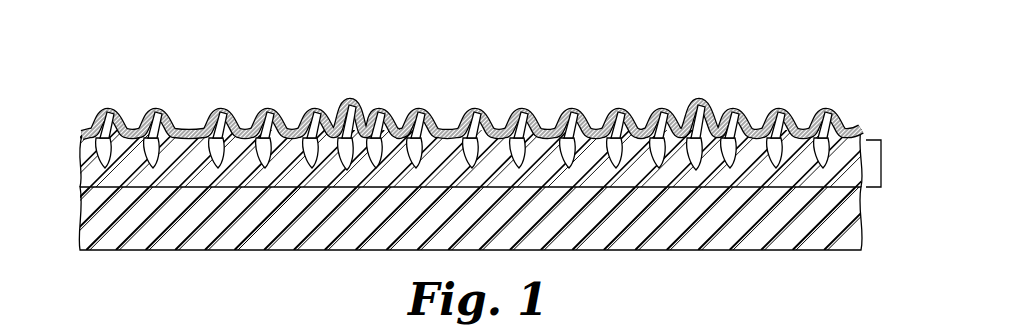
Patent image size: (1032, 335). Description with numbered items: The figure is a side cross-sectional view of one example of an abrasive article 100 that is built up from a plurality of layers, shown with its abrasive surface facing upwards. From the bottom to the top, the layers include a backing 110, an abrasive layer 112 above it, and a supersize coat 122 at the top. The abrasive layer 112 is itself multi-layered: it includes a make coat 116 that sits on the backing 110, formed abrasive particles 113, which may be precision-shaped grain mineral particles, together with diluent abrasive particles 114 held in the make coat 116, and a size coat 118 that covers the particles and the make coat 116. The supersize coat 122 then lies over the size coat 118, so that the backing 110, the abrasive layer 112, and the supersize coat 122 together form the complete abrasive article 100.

The abrasive article 100 is at (479, 132).
The backing 110 is at (853, 209).
The abrasive layer 112 is at (473, 116).
The formed abrasive particles 113 is at (351, 101).
The diluent abrasive particles 114 is at (558, 122).
The make coat 116 is at (90, 167).
The size coat 118 is at (80, 134).
The supersize coat 122 is at (161, 106).